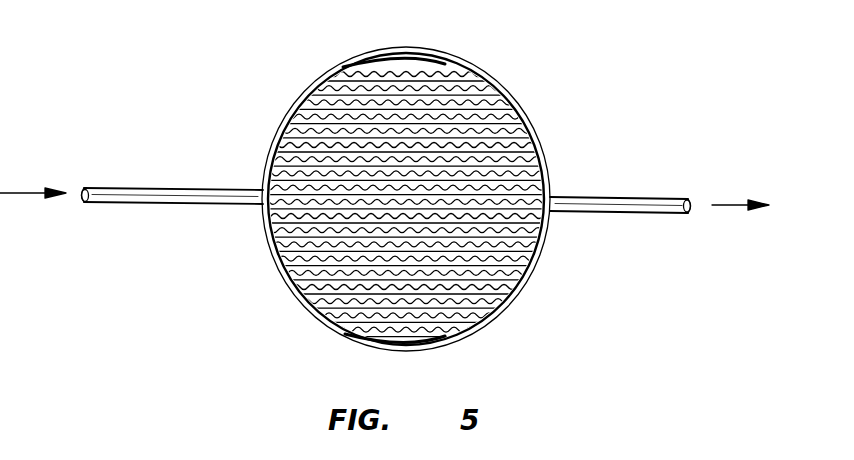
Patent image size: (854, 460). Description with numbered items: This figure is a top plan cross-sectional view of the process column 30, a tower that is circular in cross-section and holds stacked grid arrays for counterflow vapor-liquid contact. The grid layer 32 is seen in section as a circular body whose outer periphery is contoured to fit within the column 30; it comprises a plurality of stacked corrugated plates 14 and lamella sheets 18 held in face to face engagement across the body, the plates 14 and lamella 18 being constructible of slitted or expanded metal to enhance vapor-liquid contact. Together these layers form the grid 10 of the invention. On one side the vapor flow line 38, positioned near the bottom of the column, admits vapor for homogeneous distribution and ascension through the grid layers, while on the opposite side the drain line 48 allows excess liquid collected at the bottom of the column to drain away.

The grid 10 is at (495, 138).
The corrugated plates 14 is at (335, 100).
The lamella 18 is at (478, 110).
The process column 30 is at (460, 68).
The grid layer 32 is at (540, 165).
The vapor flow line 38 is at (178, 190).
The drain line 48 is at (622, 196).